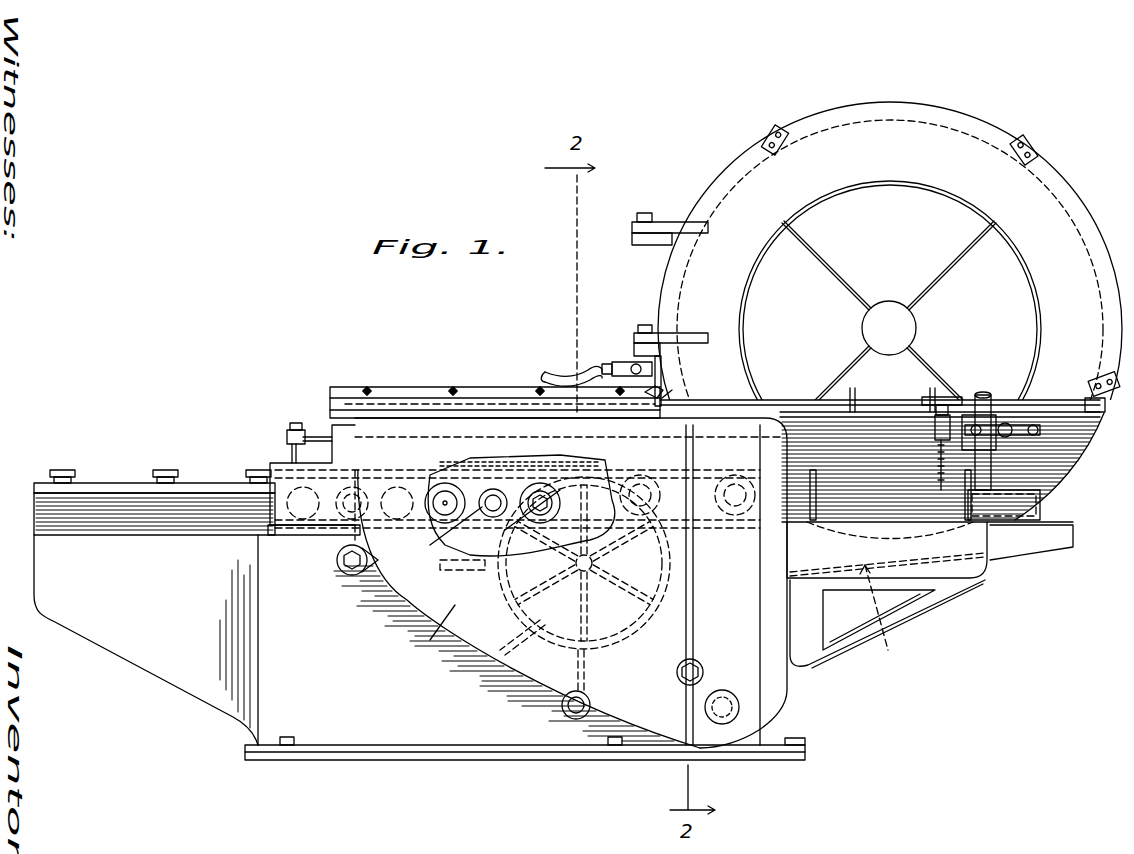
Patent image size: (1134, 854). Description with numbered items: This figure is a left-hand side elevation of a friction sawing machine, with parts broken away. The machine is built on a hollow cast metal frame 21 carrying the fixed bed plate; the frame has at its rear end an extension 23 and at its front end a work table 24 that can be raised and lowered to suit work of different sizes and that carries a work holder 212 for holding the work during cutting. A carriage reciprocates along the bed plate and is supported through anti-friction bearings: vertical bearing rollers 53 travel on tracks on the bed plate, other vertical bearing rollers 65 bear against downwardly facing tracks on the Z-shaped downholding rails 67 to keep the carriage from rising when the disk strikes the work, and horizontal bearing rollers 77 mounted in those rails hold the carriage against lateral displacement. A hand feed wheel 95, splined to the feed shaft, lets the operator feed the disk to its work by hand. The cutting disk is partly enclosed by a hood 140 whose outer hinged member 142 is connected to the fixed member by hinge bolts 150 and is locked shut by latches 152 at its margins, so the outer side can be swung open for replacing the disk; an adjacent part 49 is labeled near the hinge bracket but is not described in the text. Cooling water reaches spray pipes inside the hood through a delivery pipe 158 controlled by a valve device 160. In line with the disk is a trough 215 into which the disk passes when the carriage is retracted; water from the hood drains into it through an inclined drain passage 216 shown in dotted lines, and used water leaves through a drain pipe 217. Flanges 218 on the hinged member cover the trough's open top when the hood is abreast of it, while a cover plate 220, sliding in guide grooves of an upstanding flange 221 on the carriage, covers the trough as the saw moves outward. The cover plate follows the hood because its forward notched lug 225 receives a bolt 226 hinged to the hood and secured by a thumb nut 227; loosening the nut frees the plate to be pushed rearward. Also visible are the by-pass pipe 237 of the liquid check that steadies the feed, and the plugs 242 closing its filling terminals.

The hood 140 is at (951, 109).
The hinged member 142 is at (1044, 215).
The latches 152 is at (770, 130).
The hinge bolts 150 is at (645, 213).
The bracket arm 49 is at (656, 245).
The bolt 226 is at (660, 348).
The thumb nut 227 is at (628, 395).
The notched lug 225 is at (668, 395).
The valve device 160 is at (626, 362).
The delivery pipe 158 is at (562, 372).
The upstanding flange 221 is at (340, 400).
The cover plate 220 is at (445, 410).
The by-pass pipe 237 is at (312, 445).
The plugs 242 is at (288, 430).
The frame 21 is at (525, 589).
The extension 23 is at (160, 598).
The downholding rails 67 is at (122, 490).
The horizontal bearing rollers 77 is at (62, 470).
The vertical bearing rollers 53 is at (383, 570).
The vertical bearing rollers 65 is at (440, 565).
The hand feed wheel 95 is at (625, 655).
The trough 215 is at (425, 636).
The drain pipe 217 is at (740, 708).
The flanges 218 is at (1100, 412).
The work holder 212 is at (985, 470).
The work table 24 is at (888, 557).
The drain passage 216 is at (887, 619).